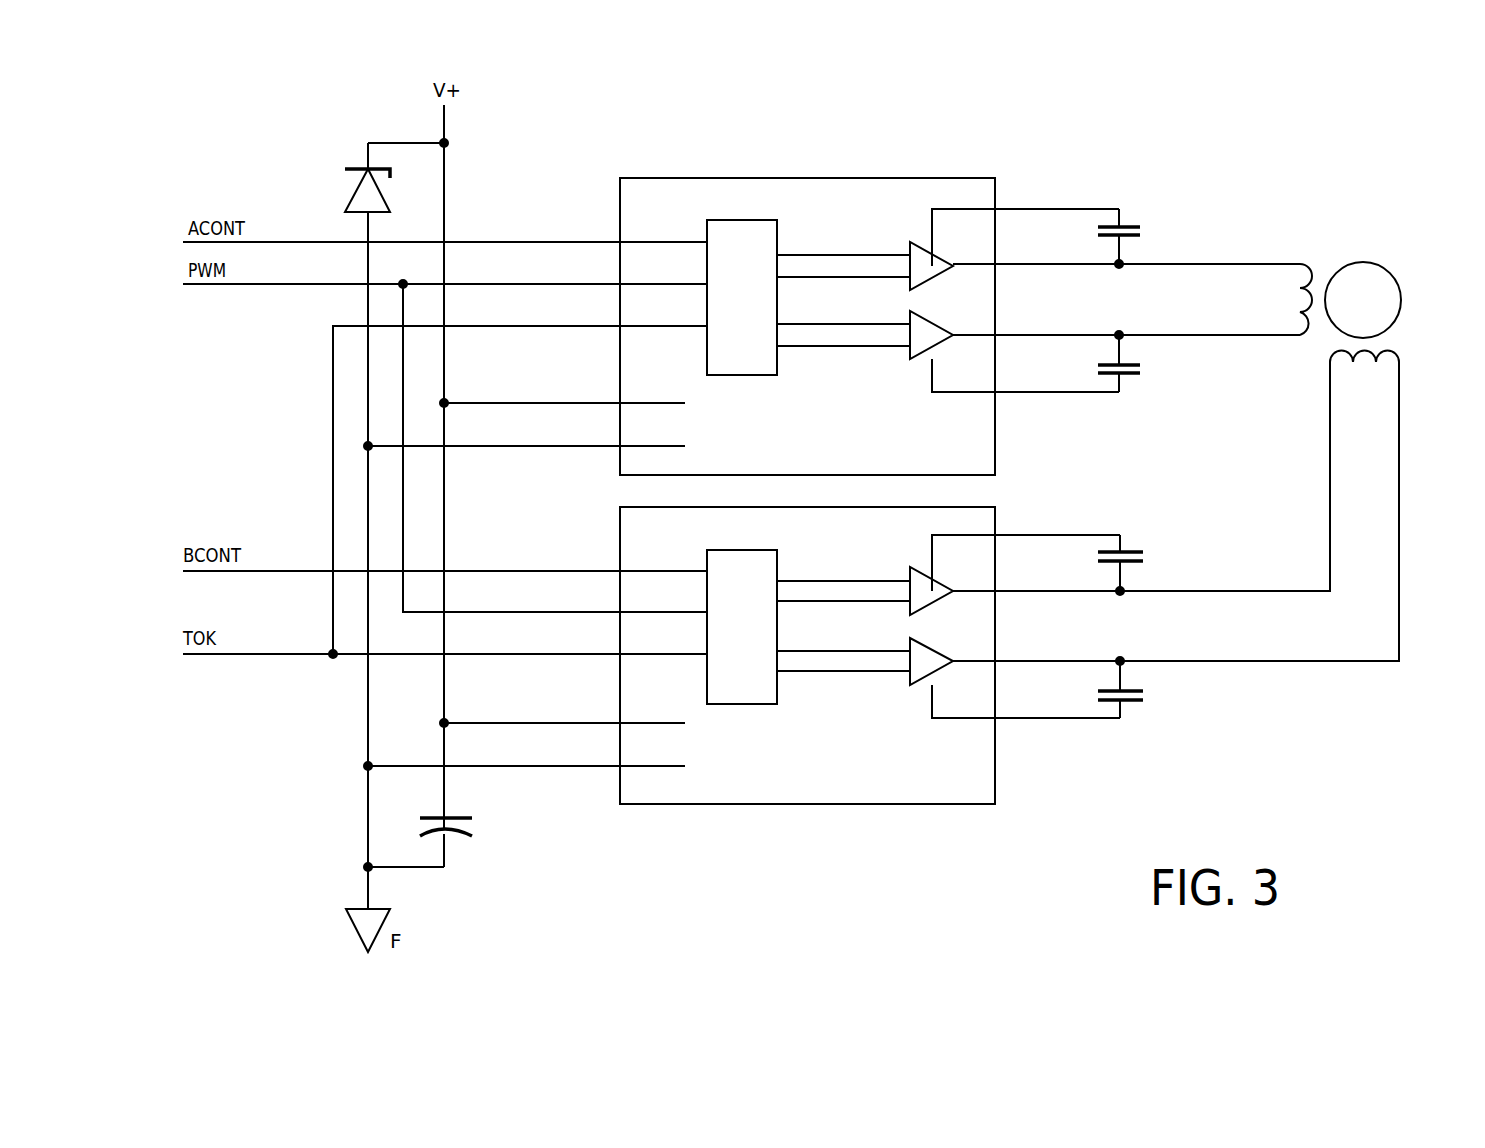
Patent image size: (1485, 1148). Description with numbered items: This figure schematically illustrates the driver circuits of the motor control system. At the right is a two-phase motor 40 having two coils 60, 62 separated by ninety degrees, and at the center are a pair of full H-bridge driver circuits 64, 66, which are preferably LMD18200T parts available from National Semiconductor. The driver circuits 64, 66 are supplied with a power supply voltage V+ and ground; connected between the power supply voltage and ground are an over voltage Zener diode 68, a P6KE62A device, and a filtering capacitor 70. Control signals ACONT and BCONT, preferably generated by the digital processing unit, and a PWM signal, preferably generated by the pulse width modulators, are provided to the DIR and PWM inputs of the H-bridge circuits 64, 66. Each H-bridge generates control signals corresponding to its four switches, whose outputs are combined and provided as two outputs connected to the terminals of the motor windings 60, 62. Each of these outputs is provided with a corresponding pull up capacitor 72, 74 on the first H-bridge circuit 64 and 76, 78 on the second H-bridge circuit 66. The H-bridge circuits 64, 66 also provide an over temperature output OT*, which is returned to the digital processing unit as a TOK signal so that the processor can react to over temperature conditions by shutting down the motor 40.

The two-phase motor 40 is at (1392, 273).
The coil 60 is at (1312, 273).
The coil 62 is at (1389, 354).
The full H-bridge driver circuit 64 is at (845, 178).
The full H-bridge driver circuit 66 is at (847, 804).
The over voltage Zener diode 68 is at (355, 168).
The filtering capacitor 70 is at (450, 834).
The pull up capacitor 72 is at (1125, 227).
The pull up capacitor 74 is at (1125, 376).
The pull up capacitor 76 is at (1125, 553).
The pull up capacitor 78 is at (1125, 702).